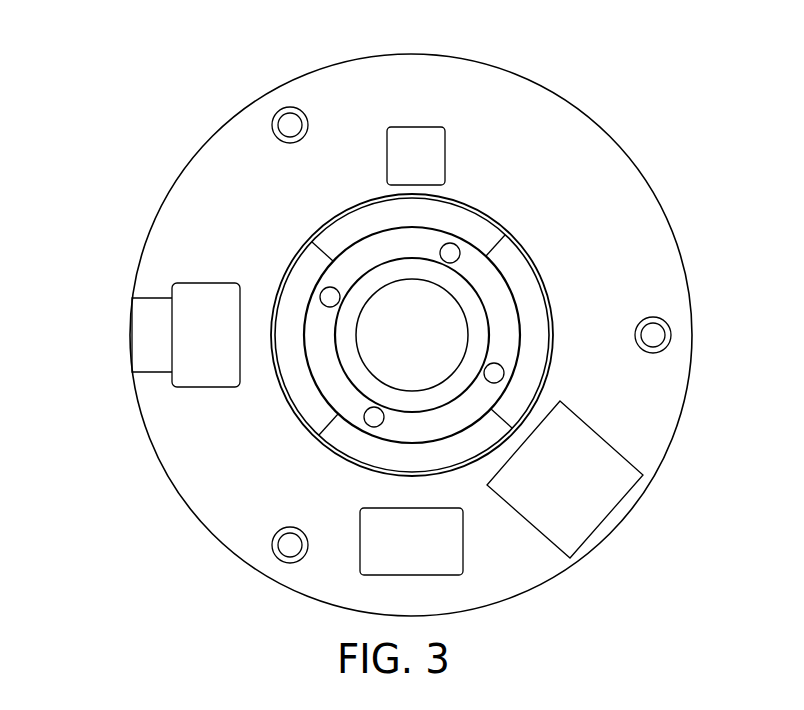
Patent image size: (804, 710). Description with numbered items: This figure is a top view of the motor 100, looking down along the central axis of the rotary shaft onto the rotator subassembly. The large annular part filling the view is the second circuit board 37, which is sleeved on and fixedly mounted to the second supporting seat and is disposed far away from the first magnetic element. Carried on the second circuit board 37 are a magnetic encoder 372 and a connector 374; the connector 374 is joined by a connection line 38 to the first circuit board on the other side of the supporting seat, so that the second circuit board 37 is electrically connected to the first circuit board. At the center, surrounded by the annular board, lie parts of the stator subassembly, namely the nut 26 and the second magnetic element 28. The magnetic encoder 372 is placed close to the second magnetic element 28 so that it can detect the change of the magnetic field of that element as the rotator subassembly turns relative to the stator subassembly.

The motor 100 is at (197, 92).
The second circuit board 37 is at (580, 148).
The magnetic encoder 372 is at (427, 148).
The connector 374 is at (200, 297).
The connection line 38 is at (140, 318).
The second magnetic element 28 is at (538, 338).
The nut 26 is at (492, 302).